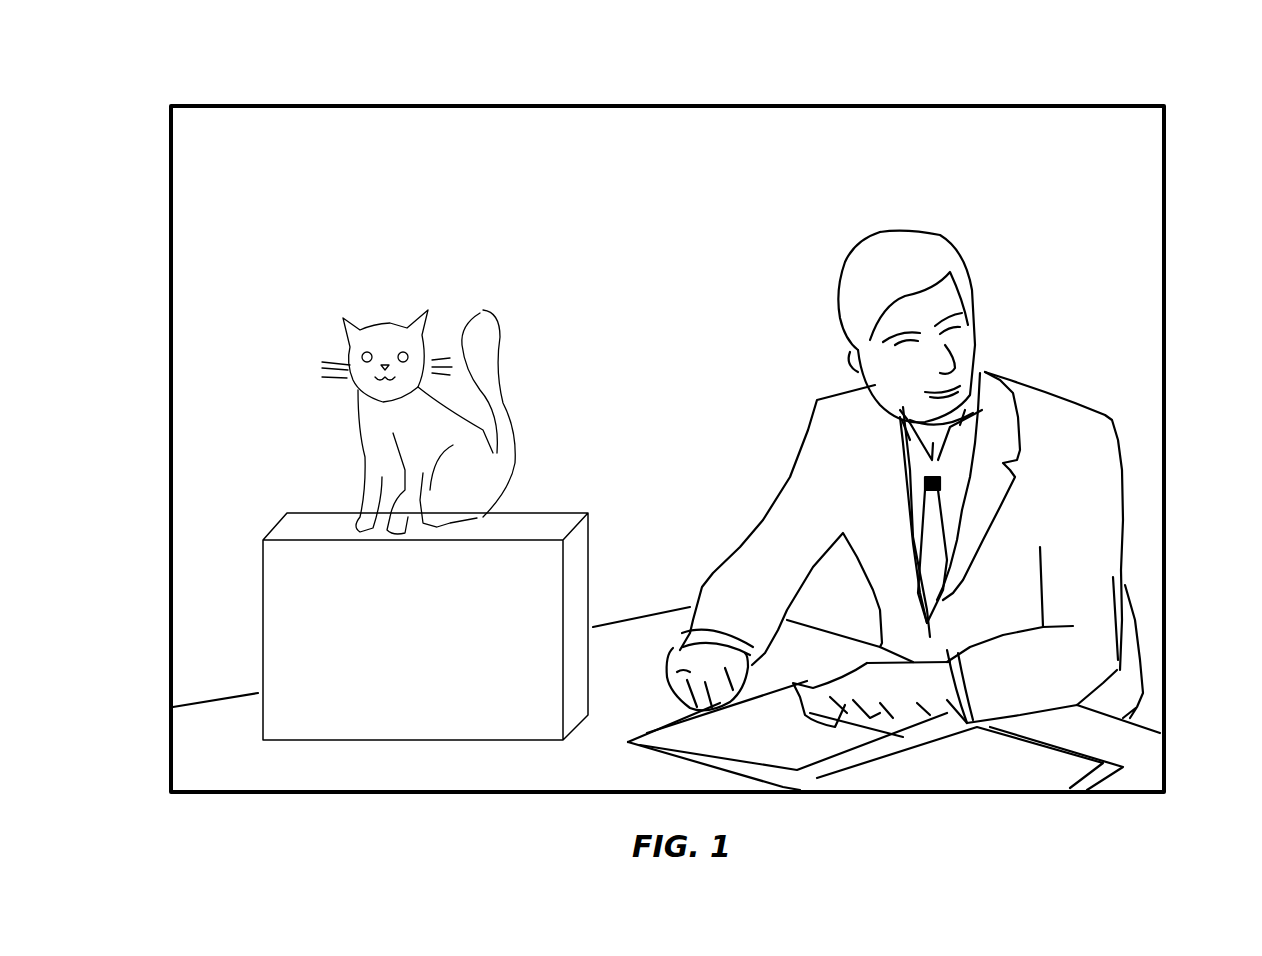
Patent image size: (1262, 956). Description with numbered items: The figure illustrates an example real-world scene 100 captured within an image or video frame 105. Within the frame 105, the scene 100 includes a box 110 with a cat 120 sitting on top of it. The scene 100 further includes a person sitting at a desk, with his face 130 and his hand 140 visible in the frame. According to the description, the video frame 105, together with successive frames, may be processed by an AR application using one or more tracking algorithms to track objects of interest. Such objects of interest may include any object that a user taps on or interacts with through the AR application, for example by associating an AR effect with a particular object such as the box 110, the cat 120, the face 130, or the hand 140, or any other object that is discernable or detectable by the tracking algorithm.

The real-world scene 100 is at (1071, 108).
The image or video frame 105 is at (170, 127).
The box 110 is at (284, 513).
The cat 120 is at (342, 319).
The face 130 is at (850, 352).
The hand 140 is at (678, 671).